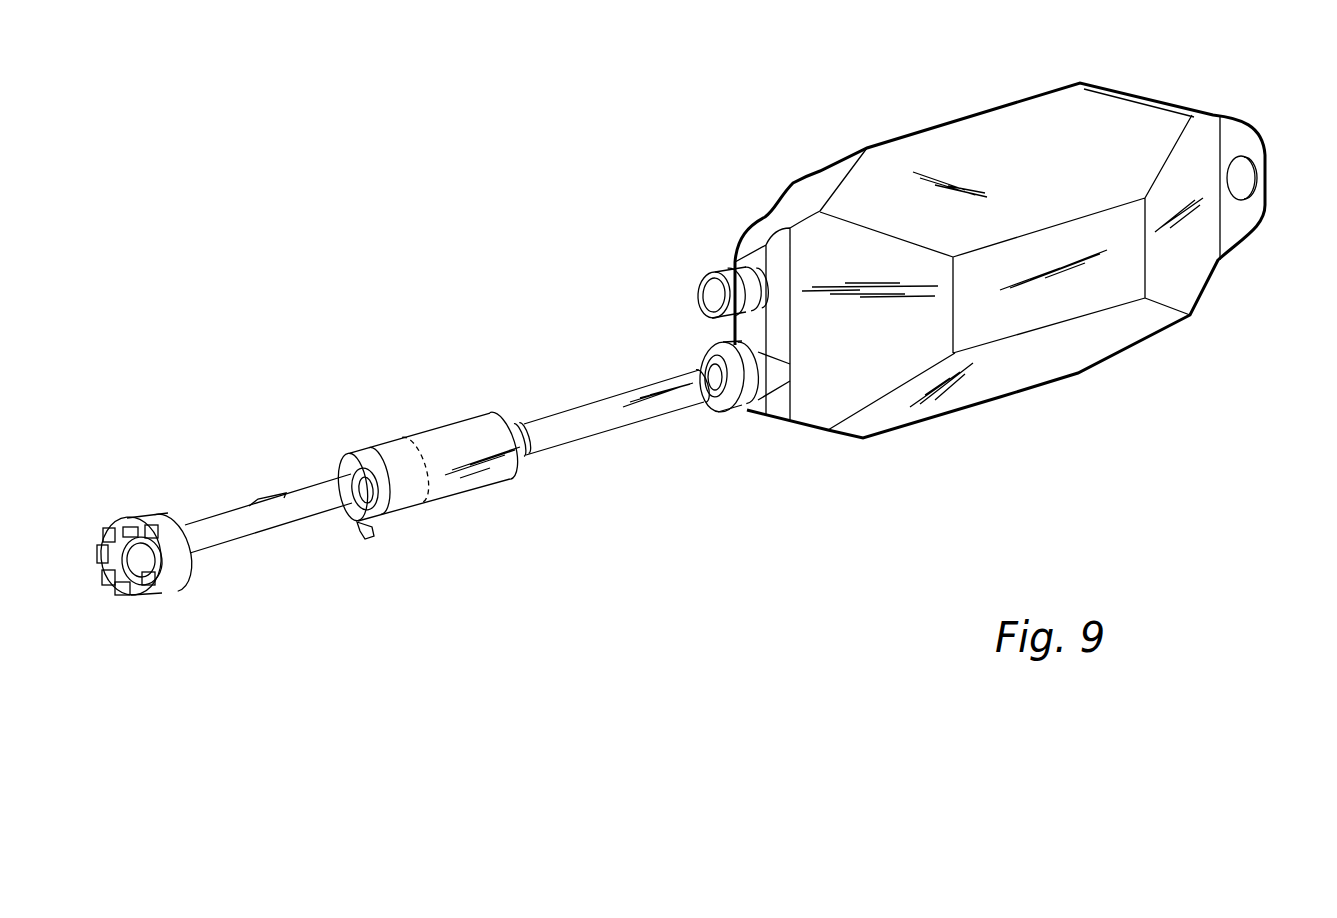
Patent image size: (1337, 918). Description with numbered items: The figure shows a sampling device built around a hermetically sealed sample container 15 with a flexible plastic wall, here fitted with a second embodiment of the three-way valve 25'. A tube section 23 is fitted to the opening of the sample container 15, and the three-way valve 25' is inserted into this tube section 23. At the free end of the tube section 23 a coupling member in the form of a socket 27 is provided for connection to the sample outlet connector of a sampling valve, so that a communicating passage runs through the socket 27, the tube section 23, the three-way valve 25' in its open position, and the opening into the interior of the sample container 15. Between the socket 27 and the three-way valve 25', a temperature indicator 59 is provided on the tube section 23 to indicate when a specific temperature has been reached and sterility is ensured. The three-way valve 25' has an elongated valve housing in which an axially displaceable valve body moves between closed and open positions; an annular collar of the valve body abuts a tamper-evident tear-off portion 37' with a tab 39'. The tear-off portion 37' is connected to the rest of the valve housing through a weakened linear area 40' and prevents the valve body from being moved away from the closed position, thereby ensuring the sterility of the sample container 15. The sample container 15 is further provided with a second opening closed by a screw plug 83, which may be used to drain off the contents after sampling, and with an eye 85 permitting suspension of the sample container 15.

The sample container 15 is at (1078, 403).
The tube section 23 is at (232, 541).
The three-way valve 25' is at (435, 453).
The socket 27 is at (151, 499).
The tear-off portion 37' is at (364, 449).
The tab 39' is at (367, 558).
The weakened linear area 40' is at (437, 446).
The temperature indicator 59 is at (270, 497).
The screw plug 83 is at (718, 297).
The eye 85 is at (1237, 185).